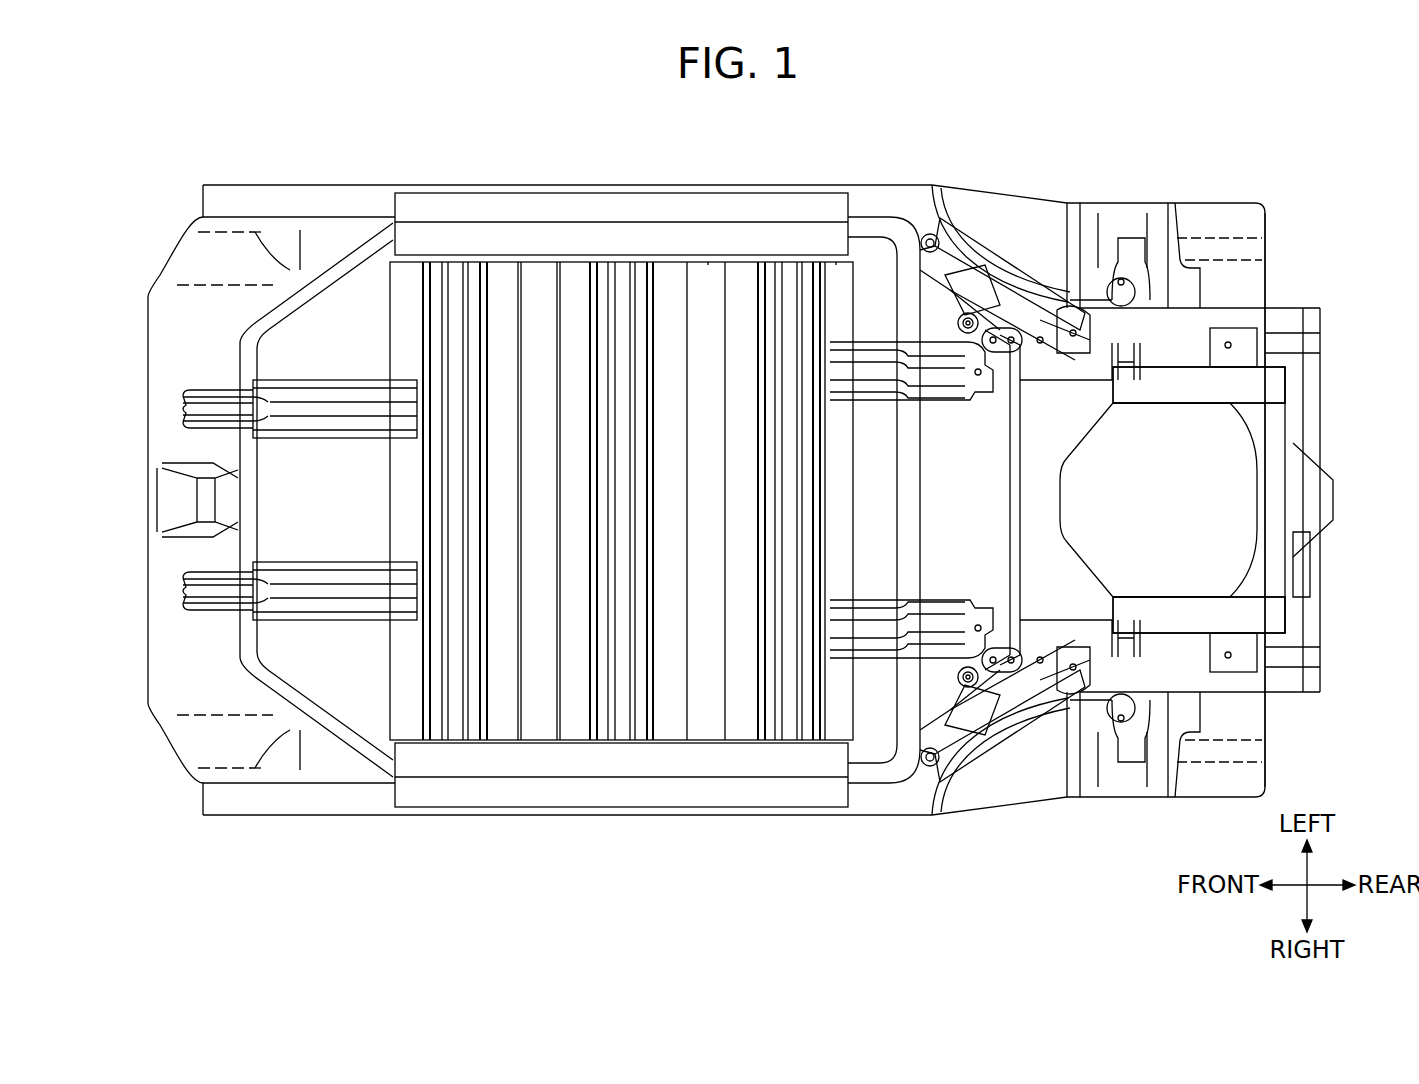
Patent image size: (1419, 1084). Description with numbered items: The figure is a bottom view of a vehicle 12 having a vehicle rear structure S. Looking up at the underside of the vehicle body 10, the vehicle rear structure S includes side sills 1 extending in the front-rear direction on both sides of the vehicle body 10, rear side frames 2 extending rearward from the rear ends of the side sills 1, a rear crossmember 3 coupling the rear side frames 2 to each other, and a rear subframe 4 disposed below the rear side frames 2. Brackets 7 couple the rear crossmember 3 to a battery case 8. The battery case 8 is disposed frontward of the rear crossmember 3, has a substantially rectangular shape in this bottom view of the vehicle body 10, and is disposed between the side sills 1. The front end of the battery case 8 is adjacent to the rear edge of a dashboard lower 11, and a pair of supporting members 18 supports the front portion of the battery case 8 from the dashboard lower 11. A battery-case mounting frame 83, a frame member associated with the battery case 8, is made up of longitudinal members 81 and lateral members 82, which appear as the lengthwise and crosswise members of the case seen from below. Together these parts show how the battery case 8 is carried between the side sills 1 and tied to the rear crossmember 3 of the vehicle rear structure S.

The side sill 1 is at (553, 188).
The rear side frame 2 is at (1040, 290).
The rear crossmember 3 is at (985, 515).
The rear subframe 4 is at (1195, 385).
The bracket 7 is at (950, 375).
The battery case 8 is at (867, 720).
The vehicle body 10 is at (980, 805).
The dashboard lower 11 is at (202, 347).
The vehicle 12 is at (862, 187).
The supporting member 18 is at (313, 440).
The longitudinal member 81 is at (730, 205).
The lateral member 82 is at (468, 285).
The battery-case mounting frame 83 is at (837, 148).
The vehicle rear structure S is at (1208, 290).